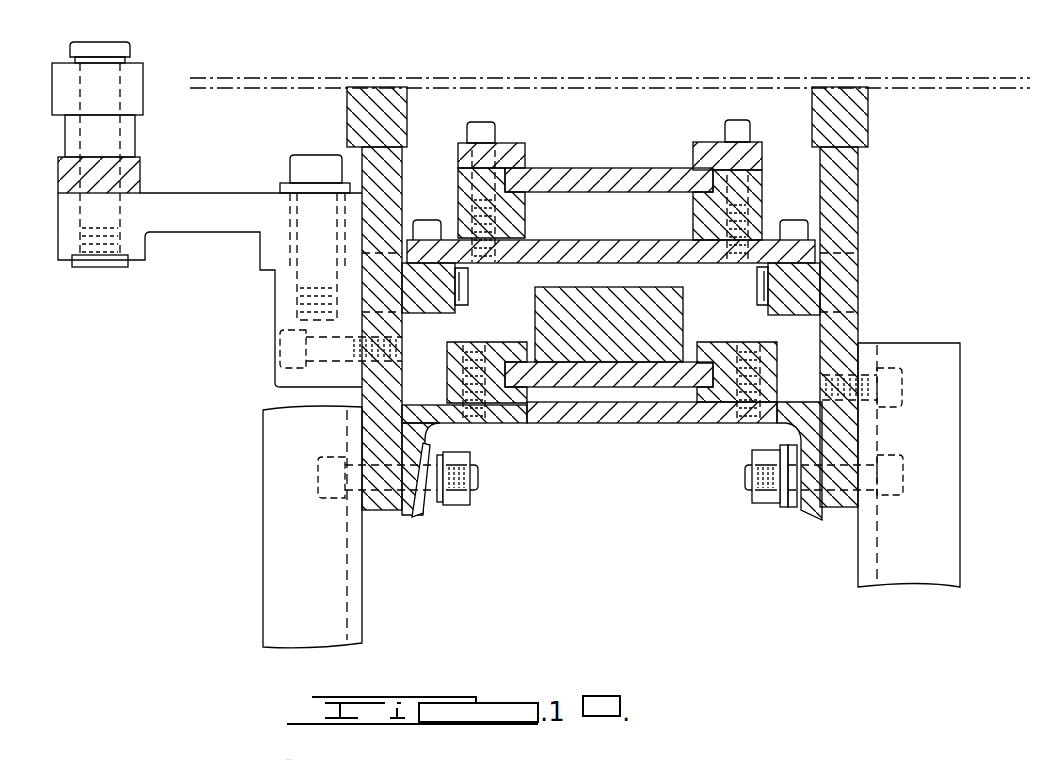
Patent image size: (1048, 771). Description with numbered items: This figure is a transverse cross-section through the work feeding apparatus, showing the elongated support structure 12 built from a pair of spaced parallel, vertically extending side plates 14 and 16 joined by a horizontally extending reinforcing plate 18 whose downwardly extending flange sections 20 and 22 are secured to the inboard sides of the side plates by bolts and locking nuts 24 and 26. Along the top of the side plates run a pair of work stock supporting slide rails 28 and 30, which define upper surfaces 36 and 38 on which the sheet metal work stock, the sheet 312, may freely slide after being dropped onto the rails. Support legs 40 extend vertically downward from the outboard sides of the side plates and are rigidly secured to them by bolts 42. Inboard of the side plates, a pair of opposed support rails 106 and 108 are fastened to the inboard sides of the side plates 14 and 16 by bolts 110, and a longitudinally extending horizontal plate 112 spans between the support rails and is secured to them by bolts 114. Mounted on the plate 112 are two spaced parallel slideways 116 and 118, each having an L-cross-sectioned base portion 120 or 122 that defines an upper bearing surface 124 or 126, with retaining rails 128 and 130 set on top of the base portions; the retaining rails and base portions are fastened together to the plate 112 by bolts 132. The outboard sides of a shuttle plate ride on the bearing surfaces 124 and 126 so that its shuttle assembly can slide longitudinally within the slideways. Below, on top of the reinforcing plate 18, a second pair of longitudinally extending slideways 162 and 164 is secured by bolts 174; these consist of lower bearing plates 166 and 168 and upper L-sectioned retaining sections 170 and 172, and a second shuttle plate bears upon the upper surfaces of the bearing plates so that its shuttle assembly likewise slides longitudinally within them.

The sheet 312 is at (368, 82).
The upper surface 38 is at (392, 86).
The bolts 132 is at (482, 120).
The upper surface 36 is at (851, 85).
The slide rail 28 is at (880, 271).
The slide rail 30 is at (245, 212).
The side plate 14 is at (862, 218).
The bolts 114 is at (428, 218).
The retaining rail 130 is at (503, 142).
The slideway 118 is at (525, 166).
The upper bearing surface 126 is at (527, 183).
The slideway 116 is at (687, 171).
The retaining rail 128 is at (711, 125).
The base portion 122 is at (514, 222).
The horizontal plate 112 is at (568, 239).
The upper bearing surface 124 is at (609, 178).
The base portion 120 is at (700, 226).
The bolts 110 is at (470, 291).
The side plate 16 is at (405, 372).
The support rail 108 is at (458, 315).
The bolts 174 is at (546, 312).
The slideway 164 is at (489, 357).
The slideway 162 is at (680, 345).
The support rail 106 is at (768, 320).
The retaining section 170 is at (773, 381).
The retaining section 172 is at (451, 367).
The lower bearing plate 168 is at (516, 400).
The lower bearing plate 166 is at (700, 425).
The support structure 12 is at (595, 488).
The bolts 24 is at (480, 488).
The locking nuts 26 is at (458, 506).
The flange section 22 is at (412, 518).
The reinforcing plate 18 is at (674, 486).
The flange section 20 is at (815, 521).
The bolts 42 is at (317, 478).
The support legs 40 is at (261, 533).